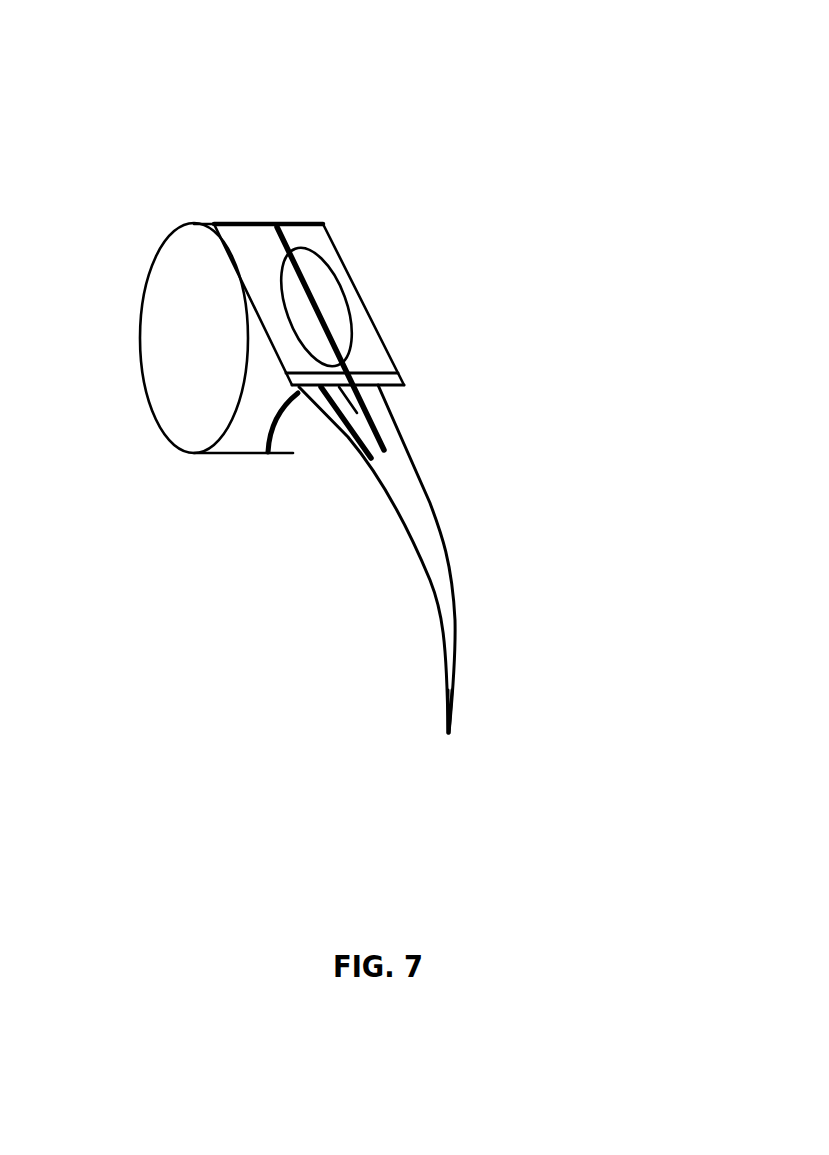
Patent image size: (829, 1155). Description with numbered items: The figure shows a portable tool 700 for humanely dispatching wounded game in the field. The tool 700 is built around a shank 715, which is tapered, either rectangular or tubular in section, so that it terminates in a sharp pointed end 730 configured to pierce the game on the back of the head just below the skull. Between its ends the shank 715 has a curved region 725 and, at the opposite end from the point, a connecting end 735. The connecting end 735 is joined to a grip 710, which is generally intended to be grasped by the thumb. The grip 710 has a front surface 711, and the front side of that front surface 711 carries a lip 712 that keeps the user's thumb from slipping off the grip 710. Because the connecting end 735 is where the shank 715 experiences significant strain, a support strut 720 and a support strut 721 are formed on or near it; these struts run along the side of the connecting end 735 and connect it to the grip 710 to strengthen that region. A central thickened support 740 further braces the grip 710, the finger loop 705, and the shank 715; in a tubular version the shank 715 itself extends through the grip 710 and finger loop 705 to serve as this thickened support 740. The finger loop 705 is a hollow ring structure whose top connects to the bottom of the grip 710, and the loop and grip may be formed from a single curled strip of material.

The portable tool 700 is at (397, 100).
The finger loop 705 is at (168, 372).
The grip 710 is at (355, 298).
The front surface 711 is at (217, 223).
The lip 712 is at (378, 367).
The shank 715 is at (450, 502).
The support strut 720 is at (405, 392).
The support strut 721 is at (320, 418).
The curved region 725 is at (450, 583).
The pointed end 730 is at (477, 713).
The connecting end 735 is at (358, 413).
The central thickened support 740 is at (293, 238).